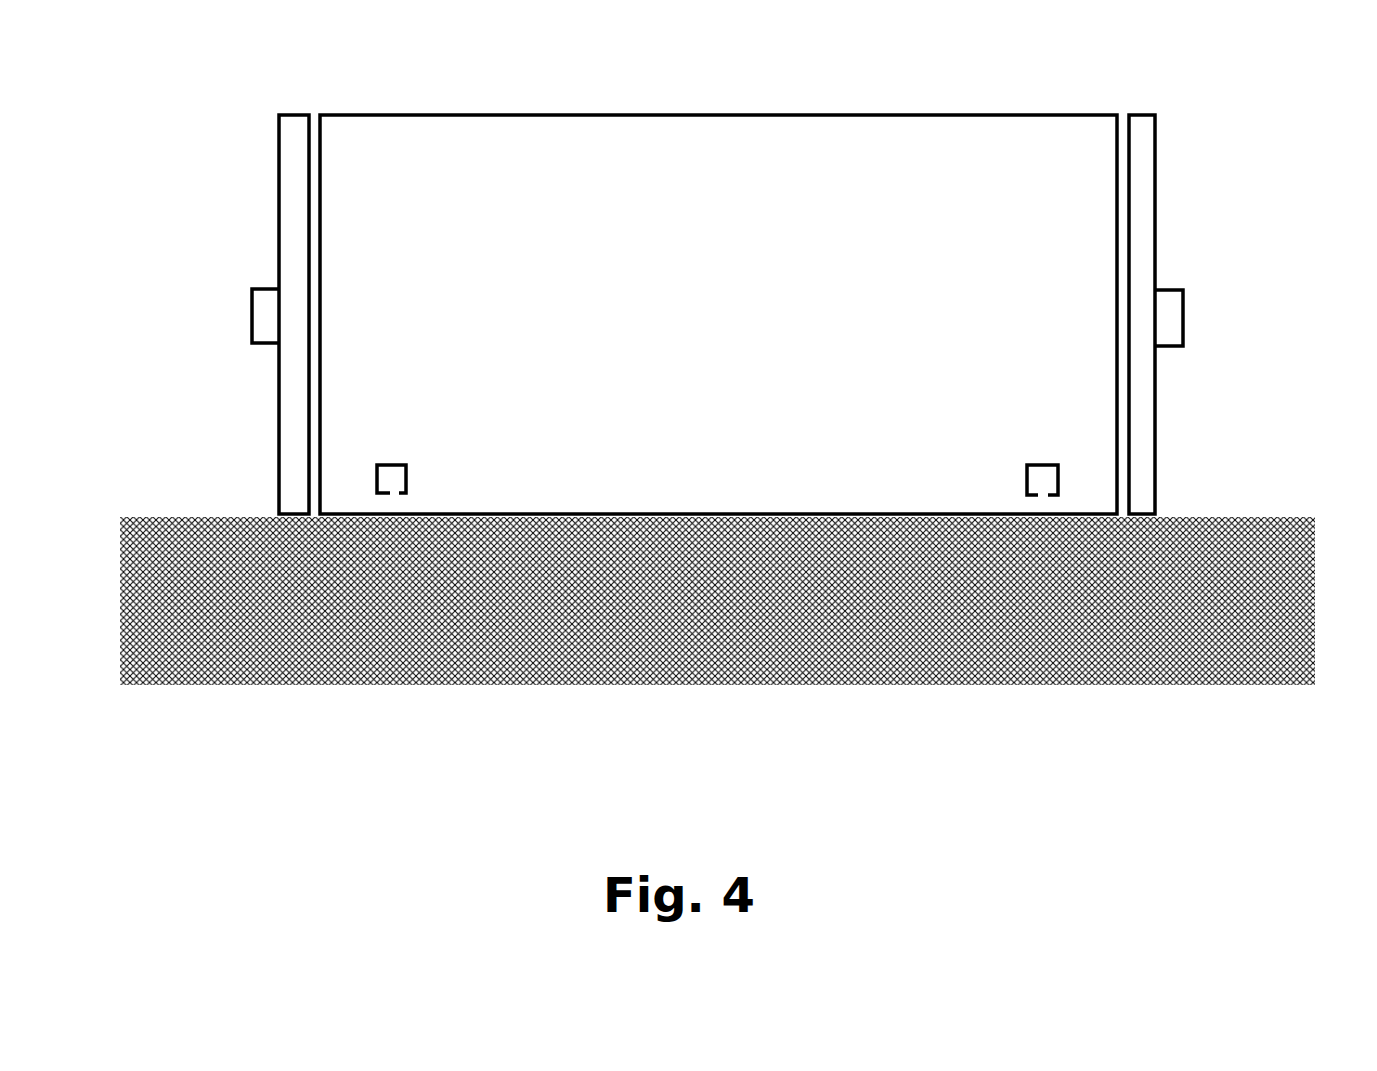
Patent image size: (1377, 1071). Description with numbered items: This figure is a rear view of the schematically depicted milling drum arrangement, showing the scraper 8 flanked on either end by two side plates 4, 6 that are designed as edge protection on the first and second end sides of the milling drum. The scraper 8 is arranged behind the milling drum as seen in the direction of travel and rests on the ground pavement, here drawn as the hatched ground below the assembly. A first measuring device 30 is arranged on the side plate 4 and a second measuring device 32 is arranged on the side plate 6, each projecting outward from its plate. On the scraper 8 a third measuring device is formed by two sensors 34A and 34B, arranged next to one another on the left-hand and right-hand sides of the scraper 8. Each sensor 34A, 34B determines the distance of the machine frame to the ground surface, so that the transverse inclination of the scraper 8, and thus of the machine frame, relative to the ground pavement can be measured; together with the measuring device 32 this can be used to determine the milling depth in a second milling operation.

The side plate 4 is at (1140, 152).
The side plate 6 is at (293, 147).
The scraper 8 is at (736, 201).
The first measuring device 30 is at (1167, 323).
The second measuring device 32 is at (264, 317).
The sensor 34A is at (393, 481).
The sensor 34B is at (1040, 482).